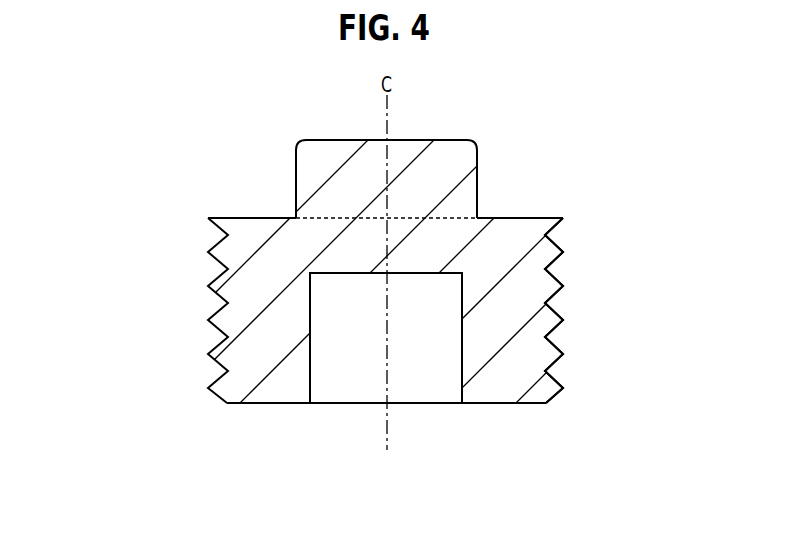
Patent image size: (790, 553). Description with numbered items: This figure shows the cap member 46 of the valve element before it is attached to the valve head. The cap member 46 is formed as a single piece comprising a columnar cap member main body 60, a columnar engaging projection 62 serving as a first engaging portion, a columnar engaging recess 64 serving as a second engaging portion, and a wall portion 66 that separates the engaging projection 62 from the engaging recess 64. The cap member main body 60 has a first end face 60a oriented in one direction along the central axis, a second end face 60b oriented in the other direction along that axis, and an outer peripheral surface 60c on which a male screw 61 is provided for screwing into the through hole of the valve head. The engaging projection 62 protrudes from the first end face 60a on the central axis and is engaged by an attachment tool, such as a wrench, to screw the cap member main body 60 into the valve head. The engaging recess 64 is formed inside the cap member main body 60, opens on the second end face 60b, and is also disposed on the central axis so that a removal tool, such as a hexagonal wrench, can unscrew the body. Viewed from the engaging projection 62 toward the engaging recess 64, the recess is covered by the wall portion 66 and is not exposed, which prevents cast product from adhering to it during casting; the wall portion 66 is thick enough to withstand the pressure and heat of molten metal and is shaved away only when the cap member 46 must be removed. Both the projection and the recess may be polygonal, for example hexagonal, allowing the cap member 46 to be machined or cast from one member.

The cap member 46 is at (122, 155).
The engaging projection 62 is at (296, 174).
The cap member main body 60 is at (196, 236).
The first end face 60a is at (508, 218).
The second end face 60b is at (508, 403).
The outer peripheral surface 60c is at (545, 303).
The male screw 61 is at (606, 310).
The engaging recess 64 is at (310, 383).
The wall portion 66 is at (422, 248).